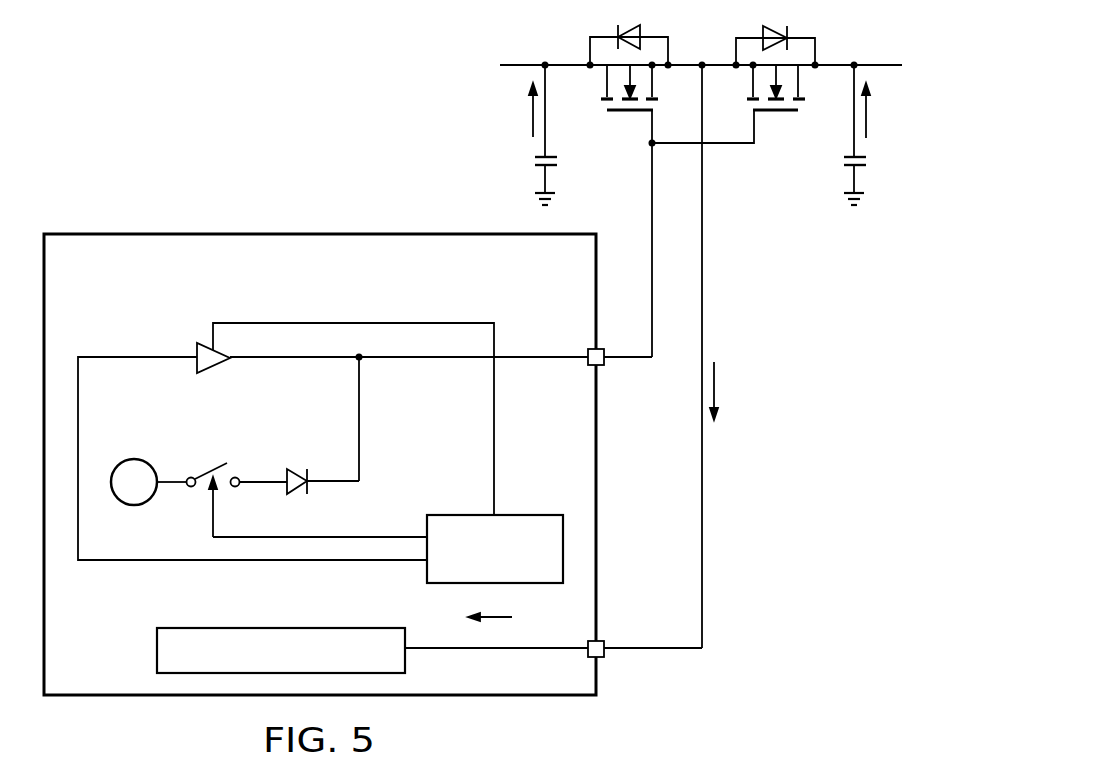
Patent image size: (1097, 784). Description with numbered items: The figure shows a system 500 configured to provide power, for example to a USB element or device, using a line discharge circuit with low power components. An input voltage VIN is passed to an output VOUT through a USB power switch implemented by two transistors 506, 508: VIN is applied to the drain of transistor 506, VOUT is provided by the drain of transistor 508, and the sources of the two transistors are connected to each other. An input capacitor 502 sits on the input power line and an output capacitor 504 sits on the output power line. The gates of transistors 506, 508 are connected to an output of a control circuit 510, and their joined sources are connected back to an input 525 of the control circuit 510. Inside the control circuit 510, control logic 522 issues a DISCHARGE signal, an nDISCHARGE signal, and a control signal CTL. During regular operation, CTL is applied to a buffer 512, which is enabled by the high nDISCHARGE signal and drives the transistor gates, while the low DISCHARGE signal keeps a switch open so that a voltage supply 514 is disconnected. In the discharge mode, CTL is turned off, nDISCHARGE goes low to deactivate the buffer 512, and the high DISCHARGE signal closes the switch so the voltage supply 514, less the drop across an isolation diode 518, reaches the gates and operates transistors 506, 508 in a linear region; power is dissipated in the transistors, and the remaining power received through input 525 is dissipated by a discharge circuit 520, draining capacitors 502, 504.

The system 500 is at (203, 77).
The input capacitor 502 is at (533, 162).
The output capacitor 504 is at (866, 163).
The transistor 506 is at (618, 114).
The transistor 508 is at (787, 114).
The control circuit 510 is at (300, 225).
The buffer 512 is at (220, 365).
The voltage supply 514 is at (133, 458).
The diode 518 is at (307, 467).
The discharge circuit 520 is at (280, 625).
The control logic 522 is at (528, 513).
The input 525 is at (605, 653).